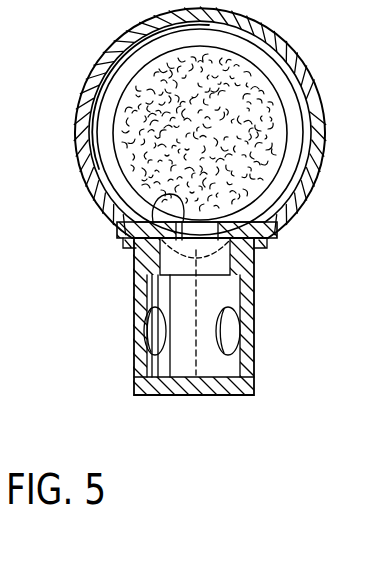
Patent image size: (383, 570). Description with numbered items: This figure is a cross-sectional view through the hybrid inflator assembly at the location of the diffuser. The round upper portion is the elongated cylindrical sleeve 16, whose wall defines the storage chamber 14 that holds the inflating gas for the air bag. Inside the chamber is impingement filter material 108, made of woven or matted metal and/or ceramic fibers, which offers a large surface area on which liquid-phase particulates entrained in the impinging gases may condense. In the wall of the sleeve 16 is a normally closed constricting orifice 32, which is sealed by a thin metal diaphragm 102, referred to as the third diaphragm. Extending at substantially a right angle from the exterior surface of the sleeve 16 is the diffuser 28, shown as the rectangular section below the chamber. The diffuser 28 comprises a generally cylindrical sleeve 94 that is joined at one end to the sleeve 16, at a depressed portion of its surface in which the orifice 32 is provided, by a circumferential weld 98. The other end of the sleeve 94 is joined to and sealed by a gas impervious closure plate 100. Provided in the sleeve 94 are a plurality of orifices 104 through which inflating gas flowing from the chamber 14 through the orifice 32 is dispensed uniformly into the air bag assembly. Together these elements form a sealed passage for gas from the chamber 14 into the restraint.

The storage chamber 14 is at (270, 60).
The elongated cylindrical sleeve 16 is at (85, 80).
The impingement filter material 108 is at (267, 110).
The constricting orifice 32 is at (150, 203).
The circumferential weld 98 is at (125, 247).
The third diaphragm 102 is at (160, 270).
The diffuser 28 is at (126, 313).
The orifices 104 is at (228, 325).
The cylindrical sleeve 94 is at (132, 358).
The closure plate 100 is at (207, 393).